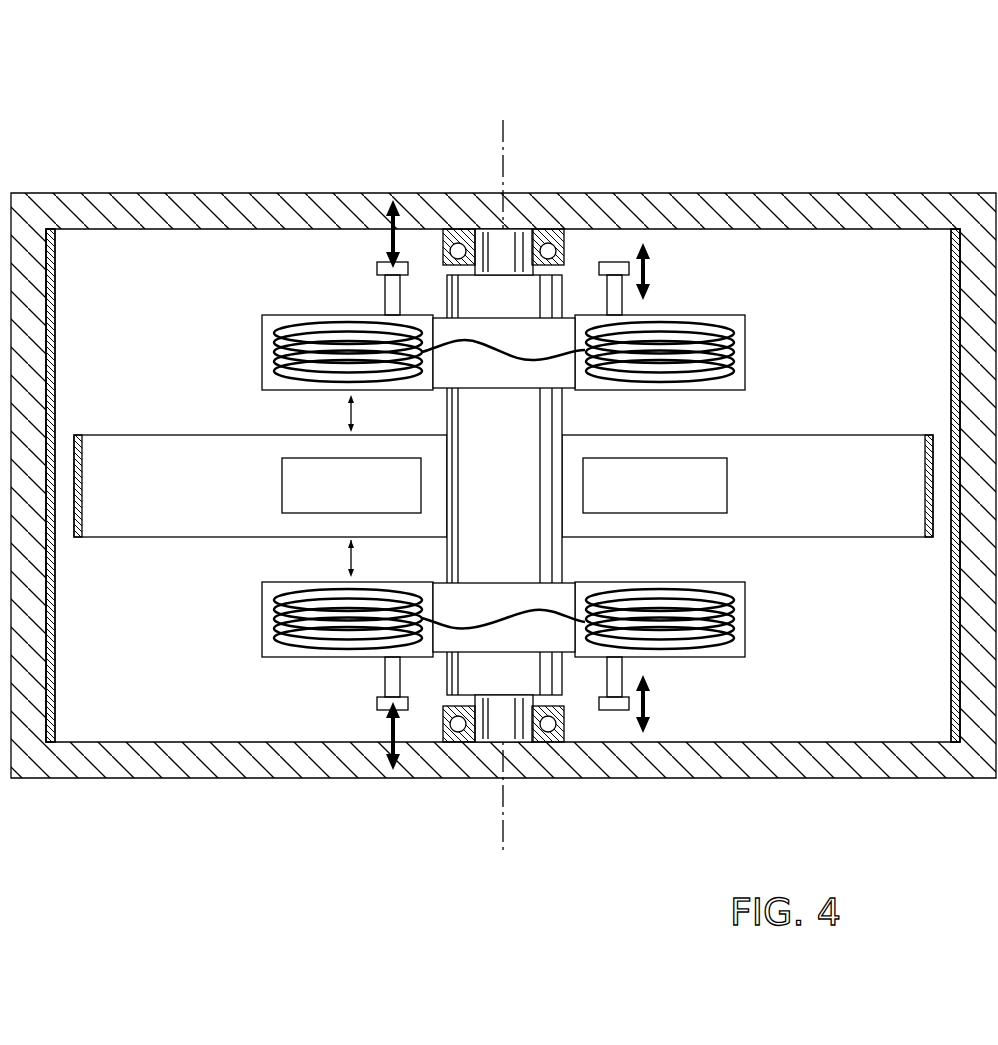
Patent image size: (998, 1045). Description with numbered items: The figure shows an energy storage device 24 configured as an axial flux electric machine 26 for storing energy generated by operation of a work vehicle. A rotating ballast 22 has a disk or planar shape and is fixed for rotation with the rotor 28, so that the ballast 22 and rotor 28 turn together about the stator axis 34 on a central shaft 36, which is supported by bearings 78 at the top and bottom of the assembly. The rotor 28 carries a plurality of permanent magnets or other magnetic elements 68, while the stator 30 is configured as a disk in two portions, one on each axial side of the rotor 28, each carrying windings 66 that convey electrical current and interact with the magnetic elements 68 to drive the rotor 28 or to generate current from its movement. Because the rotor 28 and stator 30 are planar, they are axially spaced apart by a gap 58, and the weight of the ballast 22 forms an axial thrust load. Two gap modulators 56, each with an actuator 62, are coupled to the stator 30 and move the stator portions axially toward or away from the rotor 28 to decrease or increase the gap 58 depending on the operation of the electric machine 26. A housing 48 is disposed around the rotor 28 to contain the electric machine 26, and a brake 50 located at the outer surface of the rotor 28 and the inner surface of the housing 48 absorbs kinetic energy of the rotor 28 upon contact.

The ballast 22 is at (122, 452).
The energy storage device 24 is at (203, 99).
The electric machine 26 is at (183, 722).
The rotor 28 is at (870, 452).
The stator 30 is at (745, 333).
The stator axis 34 is at (500, 830).
The shaft 36 is at (538, 745).
The housing 48 is at (93, 720).
The brake 50 is at (72, 510).
The gap modulator 56 is at (363, 270).
The gap 58 is at (345, 412).
The actuator 62 is at (383, 262).
The windings 66 is at (705, 320).
The magnetic elements 68 is at (290, 487).
The bearings 78 is at (450, 240).